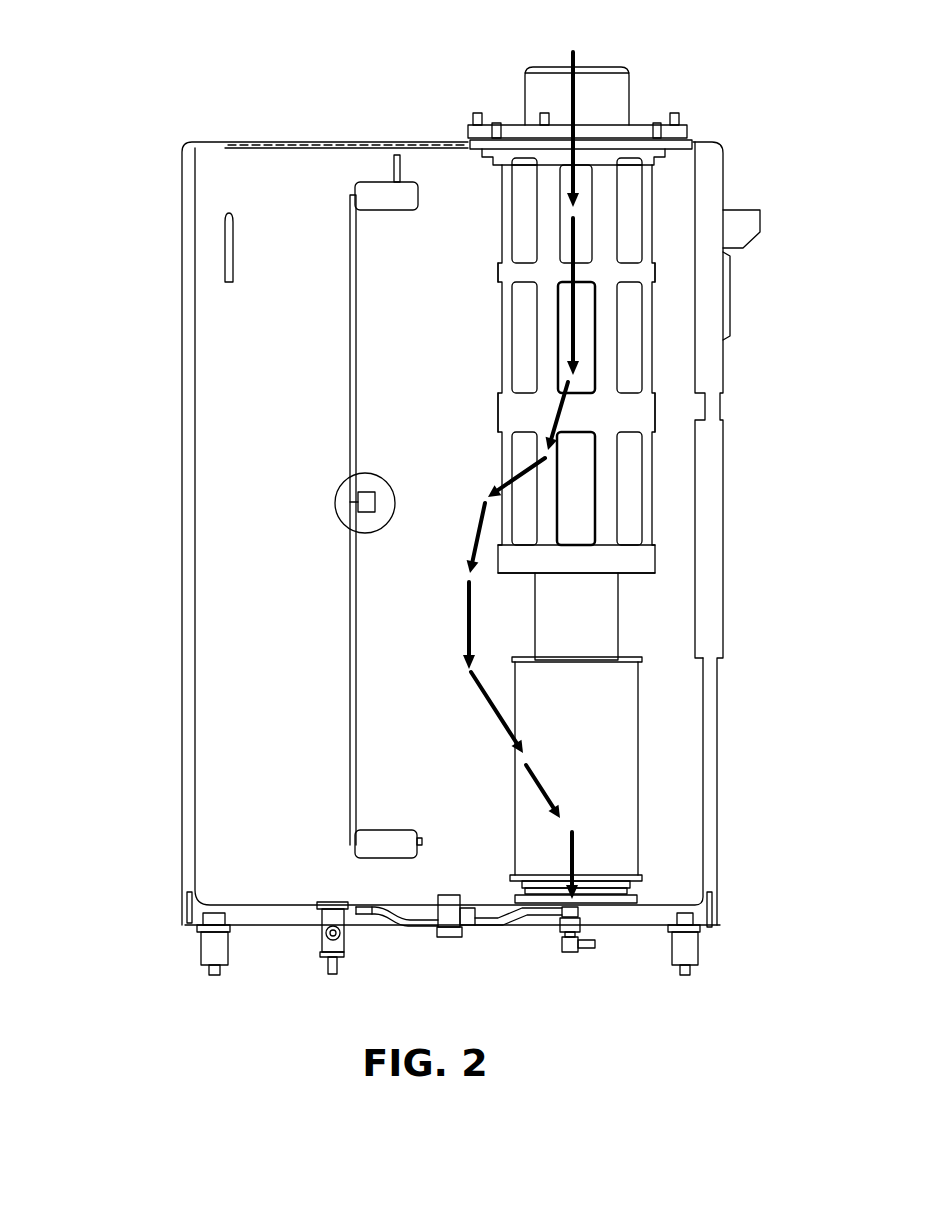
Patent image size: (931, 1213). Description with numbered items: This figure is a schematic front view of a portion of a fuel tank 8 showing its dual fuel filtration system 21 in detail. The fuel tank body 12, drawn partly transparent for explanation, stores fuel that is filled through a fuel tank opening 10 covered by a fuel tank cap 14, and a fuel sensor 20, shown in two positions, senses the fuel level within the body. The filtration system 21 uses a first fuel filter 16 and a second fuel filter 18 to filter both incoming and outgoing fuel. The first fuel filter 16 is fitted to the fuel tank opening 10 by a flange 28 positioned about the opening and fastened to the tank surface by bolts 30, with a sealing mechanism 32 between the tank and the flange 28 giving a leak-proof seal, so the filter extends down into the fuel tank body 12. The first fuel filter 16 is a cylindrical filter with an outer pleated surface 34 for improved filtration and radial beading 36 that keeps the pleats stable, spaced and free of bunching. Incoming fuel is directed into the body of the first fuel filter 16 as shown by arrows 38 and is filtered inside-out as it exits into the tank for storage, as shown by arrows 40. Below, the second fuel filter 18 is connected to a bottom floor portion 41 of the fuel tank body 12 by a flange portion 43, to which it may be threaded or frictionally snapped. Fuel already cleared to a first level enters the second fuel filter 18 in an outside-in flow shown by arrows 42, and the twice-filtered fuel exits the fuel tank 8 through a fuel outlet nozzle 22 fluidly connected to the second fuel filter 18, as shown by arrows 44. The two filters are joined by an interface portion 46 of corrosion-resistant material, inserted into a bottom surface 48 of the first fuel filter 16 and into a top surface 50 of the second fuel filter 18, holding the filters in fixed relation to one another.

The fuel tank 8 is at (175, 470).
The fuel tank opening 10 is at (482, 160).
The fuel tank body 12 is at (205, 563).
The fuel tank cap 14 is at (602, 83).
The first fuel filter 16 is at (648, 348).
The second fuel filter 18 is at (630, 733).
The fuel sensor 20 is at (355, 332).
The fuel filtration system 21 is at (438, 560).
The fuel outlet nozzle 22 is at (587, 948).
The flange 28 is at (686, 132).
The bolts 30 is at (540, 112).
The sealing mechanism 32 is at (677, 143).
The outer pleated surface 34 is at (603, 243).
The radial beading 36 is at (630, 273).
The arrows 38 is at (567, 63).
The arrows 40 is at (478, 540).
The bottom floor portion 41 is at (372, 909).
The arrows 42 is at (487, 703).
The flange portion 43 is at (623, 893).
The arrows 44 is at (532, 790).
The interface portion 46 is at (605, 632).
The bottom surface 48 is at (635, 575).
The top surface 50 is at (633, 650).